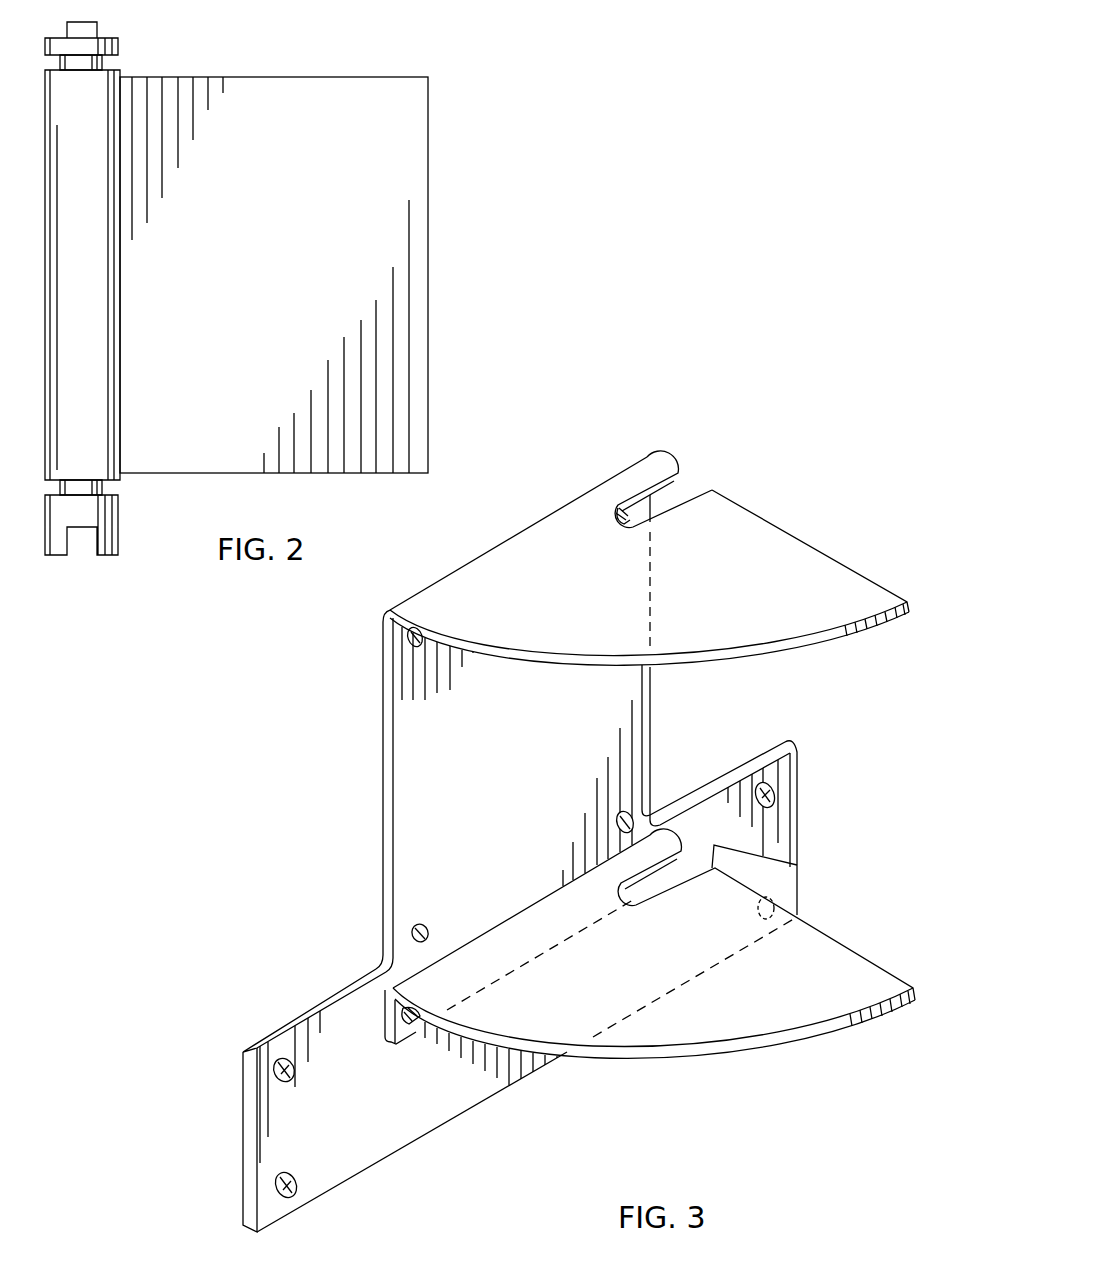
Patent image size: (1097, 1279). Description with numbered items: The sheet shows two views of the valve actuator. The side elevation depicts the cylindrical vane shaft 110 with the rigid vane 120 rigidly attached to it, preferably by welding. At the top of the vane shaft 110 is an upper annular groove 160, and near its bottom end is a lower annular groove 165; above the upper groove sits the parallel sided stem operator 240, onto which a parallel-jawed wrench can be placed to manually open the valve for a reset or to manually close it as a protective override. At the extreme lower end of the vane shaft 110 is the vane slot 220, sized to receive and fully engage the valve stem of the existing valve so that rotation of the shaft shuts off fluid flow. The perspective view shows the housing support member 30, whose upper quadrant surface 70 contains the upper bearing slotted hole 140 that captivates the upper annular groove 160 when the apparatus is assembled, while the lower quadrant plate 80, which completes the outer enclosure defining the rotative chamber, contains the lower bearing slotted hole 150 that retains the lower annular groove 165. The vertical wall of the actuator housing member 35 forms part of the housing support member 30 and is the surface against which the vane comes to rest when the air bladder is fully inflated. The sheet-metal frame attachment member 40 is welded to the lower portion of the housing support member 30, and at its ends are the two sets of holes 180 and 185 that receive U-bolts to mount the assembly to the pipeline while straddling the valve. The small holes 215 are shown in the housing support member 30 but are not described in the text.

In FIG. 2, the parallel sided stem operator 240 is at (97, 30).
In FIG. 2, the upper annular groove 160 is at (102, 62).
In FIG. 2, the cylindrical vane shaft 110 is at (82, 335).
In FIG. 2, the rigid vane 120 is at (398, 162).
In FIG. 2, the lower annular groove 165 is at (105, 488).
In FIG. 2, the vane slot 220 is at (77, 528).
In FIG. 3, the housing support member 30 is at (543, 518).
In FIG. 3, the upper quadrant surface 70 is at (773, 557).
In FIG. 3, the upper bearing slotted hole 140 is at (675, 497).
In FIG. 3, the actuator housing member 35 is at (422, 822).
In FIG. 3, the holes 180 is at (776, 792).
In FIG. 3, the screw holes in back plate 215 is at (407, 642).
In FIG. 3, the lower quadrant plate 80 is at (748, 1017).
In FIG. 3, the lower bearing slotted hole 150 is at (807, 862).
In FIG. 3, the frame attachment member 40 is at (455, 1092).
In FIG. 3, the holes 185 is at (280, 1060).